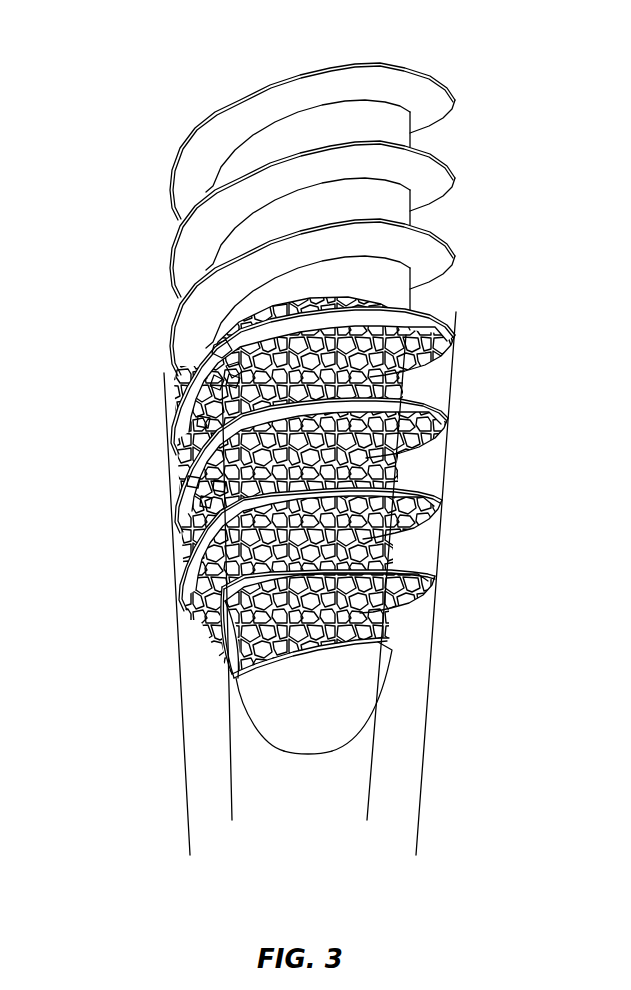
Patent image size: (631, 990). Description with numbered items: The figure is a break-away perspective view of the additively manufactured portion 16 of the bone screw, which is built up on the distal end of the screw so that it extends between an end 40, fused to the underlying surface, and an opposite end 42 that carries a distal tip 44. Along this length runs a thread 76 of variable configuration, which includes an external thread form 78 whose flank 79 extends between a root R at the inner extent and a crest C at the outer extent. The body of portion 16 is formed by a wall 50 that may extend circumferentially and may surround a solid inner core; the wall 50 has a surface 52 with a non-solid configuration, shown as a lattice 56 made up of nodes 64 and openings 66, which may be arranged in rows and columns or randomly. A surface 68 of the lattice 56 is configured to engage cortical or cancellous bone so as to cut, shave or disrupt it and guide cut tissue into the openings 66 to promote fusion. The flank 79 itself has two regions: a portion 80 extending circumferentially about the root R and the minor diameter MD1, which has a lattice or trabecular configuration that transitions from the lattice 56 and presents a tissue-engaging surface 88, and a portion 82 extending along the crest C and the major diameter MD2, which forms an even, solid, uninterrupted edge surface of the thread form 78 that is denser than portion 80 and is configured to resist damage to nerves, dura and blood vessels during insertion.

The portion 16 is at (88, 157).
The end 40 is at (345, 63).
The end 42 is at (348, 690).
The distal tip 44 is at (328, 708).
The wall 50 is at (212, 393).
The surface 52 is at (213, 373).
The lattice 56 is at (197, 415).
The nodes 64 is at (228, 372).
The openings 66 is at (225, 365).
The surface 68 is at (213, 343).
The thread 76 is at (482, 422).
The external thread form 78 is at (427, 432).
The flank 79 is at (425, 420).
The portion 80 is at (200, 494).
The portion 82 is at (187, 475).
The surface 88 is at (213, 478).
The crest C is at (450, 413).
The root R is at (423, 457).
The minor diameter MD1 is at (365, 810).
The major diameter MD2 is at (414, 842).